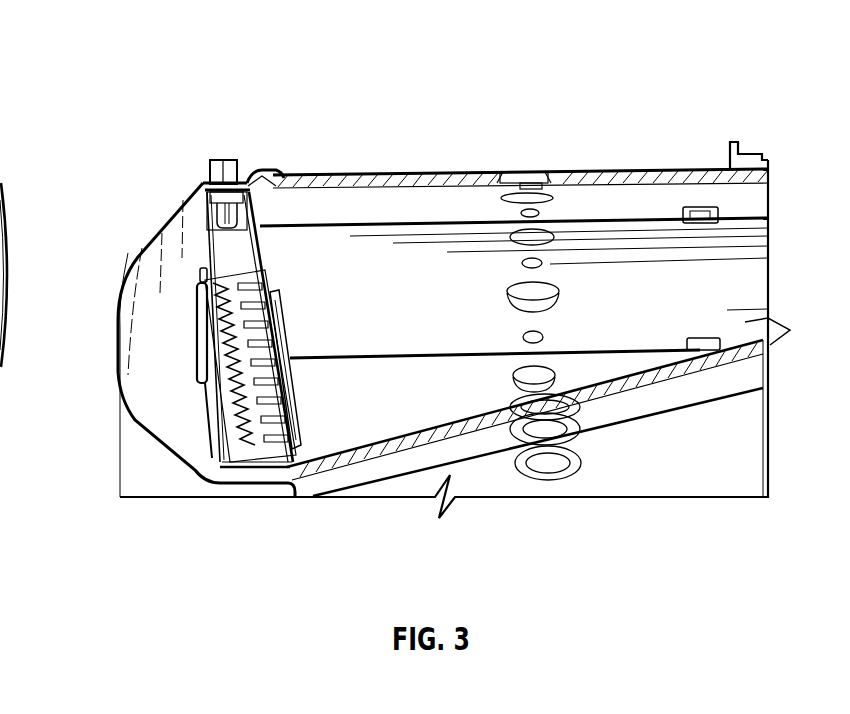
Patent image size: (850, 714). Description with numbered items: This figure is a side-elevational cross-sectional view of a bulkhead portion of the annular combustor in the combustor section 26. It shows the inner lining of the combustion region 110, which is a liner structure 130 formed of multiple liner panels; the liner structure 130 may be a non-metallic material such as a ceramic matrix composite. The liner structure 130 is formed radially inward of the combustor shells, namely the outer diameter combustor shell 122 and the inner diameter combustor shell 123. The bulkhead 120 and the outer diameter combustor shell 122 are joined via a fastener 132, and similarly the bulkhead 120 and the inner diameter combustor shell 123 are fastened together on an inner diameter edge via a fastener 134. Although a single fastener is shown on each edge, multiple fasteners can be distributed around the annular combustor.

The combustor section 26 is at (312, 110).
The combustion region 110 is at (736, 259).
The bulkhead 120 is at (147, 256).
The outer diameter combustor shell 122 is at (601, 170).
The inner diameter combustor shell 123 is at (373, 473).
The liner structure 130 is at (418, 173).
The fastener 132 is at (220, 162).
The fastener 134 is at (233, 447).